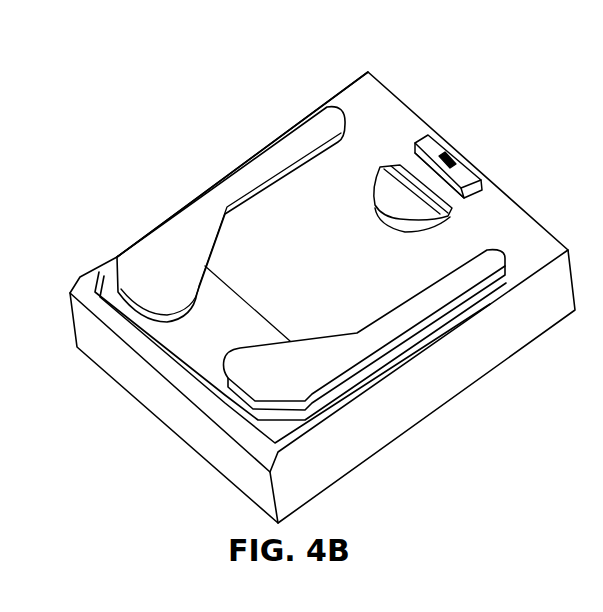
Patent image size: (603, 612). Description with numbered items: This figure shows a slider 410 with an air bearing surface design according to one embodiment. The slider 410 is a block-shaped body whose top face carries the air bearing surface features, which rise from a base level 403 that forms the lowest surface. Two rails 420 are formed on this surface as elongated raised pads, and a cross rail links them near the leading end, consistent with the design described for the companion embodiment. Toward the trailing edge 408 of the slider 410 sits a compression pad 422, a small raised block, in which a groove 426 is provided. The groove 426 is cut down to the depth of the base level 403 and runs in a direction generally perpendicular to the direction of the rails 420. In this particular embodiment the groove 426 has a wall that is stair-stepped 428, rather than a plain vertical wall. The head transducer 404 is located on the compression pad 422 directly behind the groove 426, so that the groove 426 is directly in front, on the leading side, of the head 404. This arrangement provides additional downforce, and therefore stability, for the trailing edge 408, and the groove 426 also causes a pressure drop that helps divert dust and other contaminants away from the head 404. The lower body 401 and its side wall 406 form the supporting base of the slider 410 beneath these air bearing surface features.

The base body 401 is at (210, 337).
The base level 403 is at (350, 310).
The head transducer 404 is at (443, 155).
The left side wall 406 is at (132, 367).
The trailing edge 408 is at (408, 103).
The slider 410 is at (400, 408).
The rails 420 is at (327, 360).
The compression pad 422 is at (430, 143).
The groove 426 is at (450, 180).
The stair-stepped wall 428 is at (447, 187).